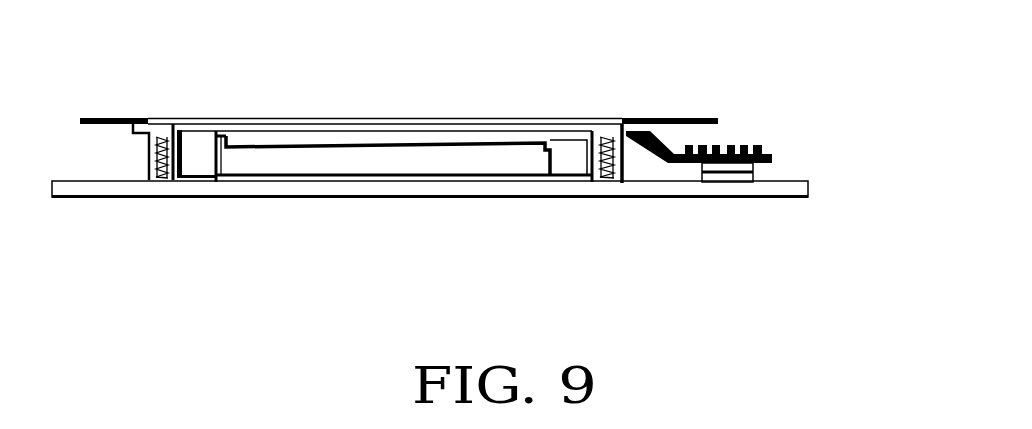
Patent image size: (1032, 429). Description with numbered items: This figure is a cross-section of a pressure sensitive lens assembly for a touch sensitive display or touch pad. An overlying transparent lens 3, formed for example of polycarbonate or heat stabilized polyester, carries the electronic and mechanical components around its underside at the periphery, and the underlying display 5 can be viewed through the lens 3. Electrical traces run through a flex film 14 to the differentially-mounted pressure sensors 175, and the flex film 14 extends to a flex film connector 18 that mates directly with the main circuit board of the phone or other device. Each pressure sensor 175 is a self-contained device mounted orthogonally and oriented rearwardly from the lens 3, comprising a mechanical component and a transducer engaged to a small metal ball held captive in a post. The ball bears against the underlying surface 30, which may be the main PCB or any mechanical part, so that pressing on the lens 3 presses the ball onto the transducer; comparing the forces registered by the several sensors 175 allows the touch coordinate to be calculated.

The transparent lens 3 is at (270, 118).
The display 5 is at (458, 163).
The flex film 14 is at (728, 145).
The flex film connector 18 is at (791, 161).
The underlying surface 30 is at (382, 198).
The pressure sensor 175 is at (203, 183).